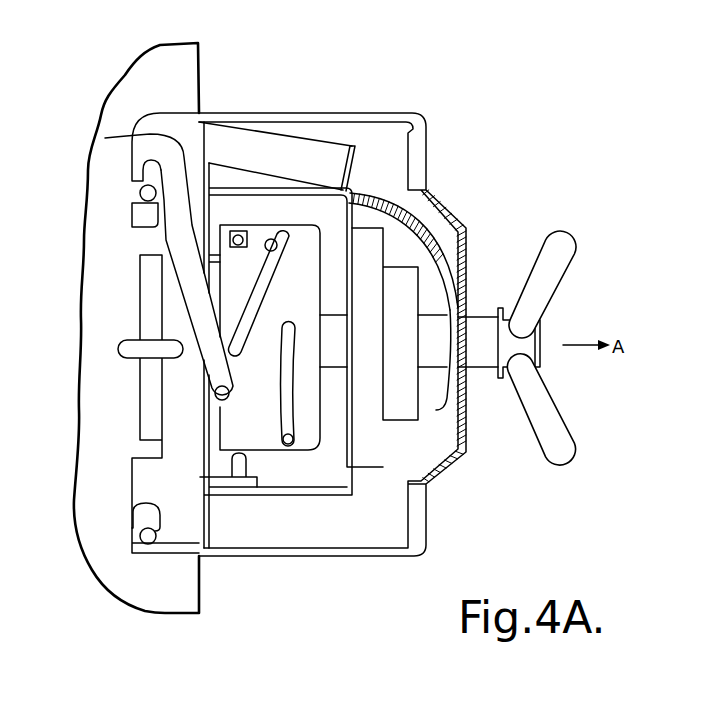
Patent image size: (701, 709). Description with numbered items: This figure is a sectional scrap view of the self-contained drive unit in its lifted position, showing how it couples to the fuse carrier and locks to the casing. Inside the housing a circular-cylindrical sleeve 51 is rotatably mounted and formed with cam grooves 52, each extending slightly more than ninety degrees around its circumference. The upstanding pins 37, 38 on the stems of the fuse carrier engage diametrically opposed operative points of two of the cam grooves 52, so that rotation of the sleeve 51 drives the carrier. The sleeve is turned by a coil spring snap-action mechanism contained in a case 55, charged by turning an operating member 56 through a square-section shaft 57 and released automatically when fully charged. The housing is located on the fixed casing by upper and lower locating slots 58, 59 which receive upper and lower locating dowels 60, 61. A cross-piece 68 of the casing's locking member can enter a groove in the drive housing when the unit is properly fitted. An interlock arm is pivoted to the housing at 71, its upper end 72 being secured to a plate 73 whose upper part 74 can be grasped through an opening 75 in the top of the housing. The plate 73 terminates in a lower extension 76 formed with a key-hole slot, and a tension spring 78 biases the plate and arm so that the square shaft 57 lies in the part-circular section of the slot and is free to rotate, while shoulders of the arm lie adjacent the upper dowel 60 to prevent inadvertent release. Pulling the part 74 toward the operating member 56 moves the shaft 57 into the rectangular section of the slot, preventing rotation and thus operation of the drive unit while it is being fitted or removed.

The upstanding pin 37 is at (241, 480).
The upstanding pin 38 is at (227, 243).
The circular-cylindrical sleeve 51 is at (216, 430).
The cam grooves 52 is at (274, 238).
The case 55 is at (410, 417).
The operating member 56 is at (564, 262).
The square-section shaft 57 is at (458, 338).
The upper locating slot 58 is at (140, 160).
The lower locating slot 59 is at (133, 514).
The upper locating dowel 60 is at (141, 195).
The lower locating dowel 61 is at (143, 537).
The cross-piece 68 is at (118, 349).
The pivot 71 is at (216, 395).
The upper ends of interlock arms 72 is at (275, 150).
The plate 73 is at (372, 198).
The upper part of plate 74 is at (353, 158).
The opening 75 is at (422, 117).
The lower extension 76 is at (446, 416).
The tension spring 78 is at (105, 138).